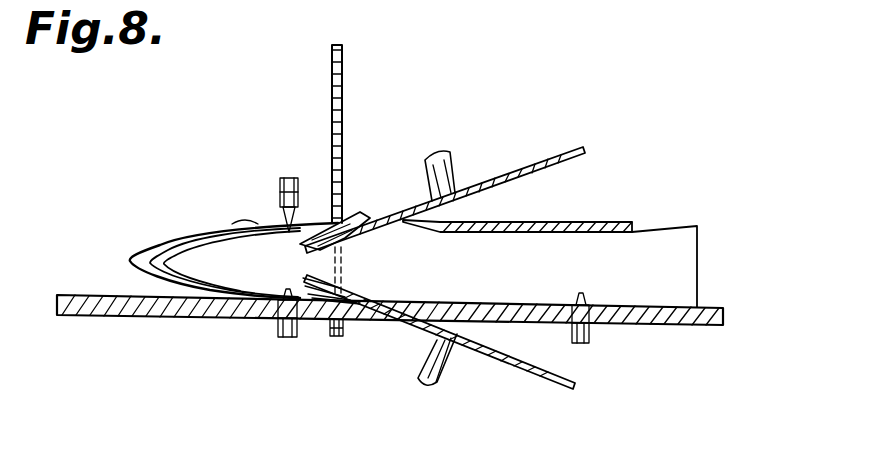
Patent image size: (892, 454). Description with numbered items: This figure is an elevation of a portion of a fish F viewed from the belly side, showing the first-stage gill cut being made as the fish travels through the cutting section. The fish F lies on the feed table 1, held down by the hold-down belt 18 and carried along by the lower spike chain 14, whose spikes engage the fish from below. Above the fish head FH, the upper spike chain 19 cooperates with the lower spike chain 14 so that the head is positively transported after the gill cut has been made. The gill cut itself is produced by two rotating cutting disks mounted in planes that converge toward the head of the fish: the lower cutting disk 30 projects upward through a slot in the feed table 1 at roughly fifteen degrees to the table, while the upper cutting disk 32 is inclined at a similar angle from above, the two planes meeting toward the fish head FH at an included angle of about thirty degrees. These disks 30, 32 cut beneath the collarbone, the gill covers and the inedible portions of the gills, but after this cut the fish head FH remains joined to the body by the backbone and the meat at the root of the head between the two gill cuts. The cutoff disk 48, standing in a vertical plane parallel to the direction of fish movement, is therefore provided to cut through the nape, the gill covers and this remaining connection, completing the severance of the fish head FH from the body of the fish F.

The feed table 1 is at (87, 295).
The lower spike chain 14 is at (274, 320).
The hold-down belt 18 is at (604, 222).
The upper spike chain 19 is at (283, 222).
The lower cutting disk 30 is at (503, 358).
The upper cutting disk 32 is at (521, 170).
The cutoff disk 48 is at (332, 101).
The fish F is at (653, 245).
The fish head FH is at (172, 233).